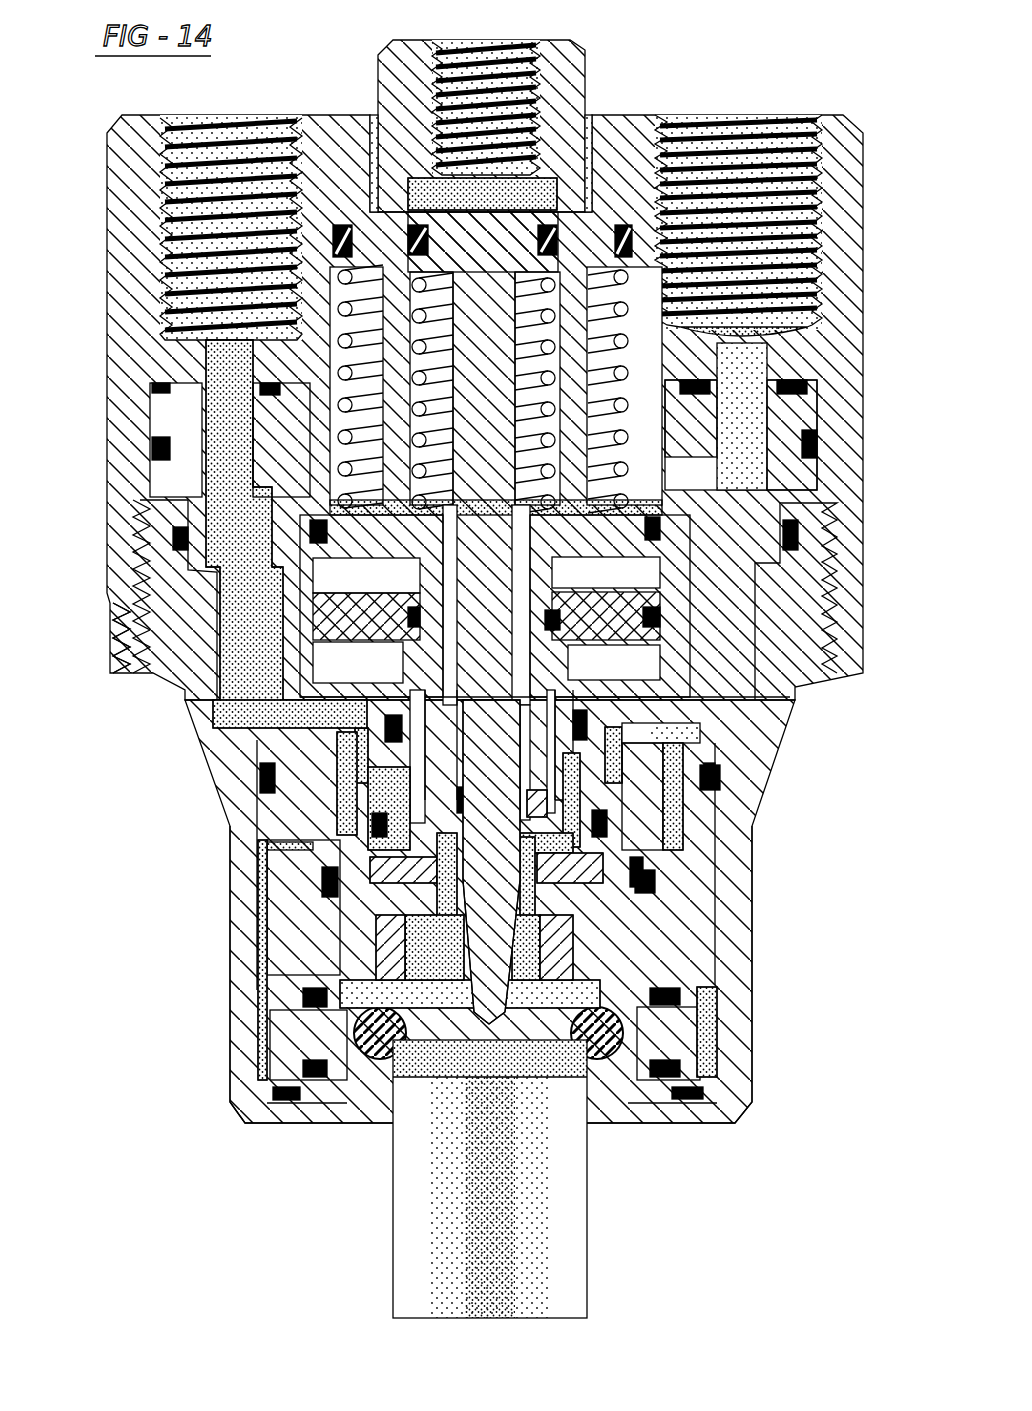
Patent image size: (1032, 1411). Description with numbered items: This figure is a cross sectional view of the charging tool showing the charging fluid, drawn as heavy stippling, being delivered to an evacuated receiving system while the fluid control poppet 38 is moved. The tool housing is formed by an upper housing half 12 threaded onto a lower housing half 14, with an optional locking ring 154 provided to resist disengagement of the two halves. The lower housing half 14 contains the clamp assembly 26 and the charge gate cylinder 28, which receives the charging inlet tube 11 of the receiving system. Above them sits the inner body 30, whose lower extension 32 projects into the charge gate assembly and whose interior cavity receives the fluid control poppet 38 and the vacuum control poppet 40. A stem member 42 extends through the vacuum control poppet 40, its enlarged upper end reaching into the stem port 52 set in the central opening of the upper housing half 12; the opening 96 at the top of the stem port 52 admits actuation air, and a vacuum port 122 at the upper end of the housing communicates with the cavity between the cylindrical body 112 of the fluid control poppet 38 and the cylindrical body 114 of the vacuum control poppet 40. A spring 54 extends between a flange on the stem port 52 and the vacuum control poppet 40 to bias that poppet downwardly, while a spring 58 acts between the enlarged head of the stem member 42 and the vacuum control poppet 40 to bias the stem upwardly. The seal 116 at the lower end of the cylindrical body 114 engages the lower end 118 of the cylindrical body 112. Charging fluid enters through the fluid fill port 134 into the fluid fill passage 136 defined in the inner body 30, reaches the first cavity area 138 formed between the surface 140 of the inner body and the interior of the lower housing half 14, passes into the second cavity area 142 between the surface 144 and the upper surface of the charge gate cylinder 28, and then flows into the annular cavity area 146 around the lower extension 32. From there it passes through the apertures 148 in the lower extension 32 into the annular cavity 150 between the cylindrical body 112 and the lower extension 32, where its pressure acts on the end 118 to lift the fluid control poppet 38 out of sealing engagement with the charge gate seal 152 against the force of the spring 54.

The charging inlet tube 11 is at (570, 1160).
The upper housing half 12 is at (100, 207).
The lower housing half 14 is at (226, 958).
The clamp assembly 26 is at (288, 918).
The charge gate cylinder 28 is at (236, 746).
The inner body 30 is at (145, 472).
The lower extension 32 is at (682, 804).
The fluid control poppet 38 is at (576, 664).
The vacuum control poppet 40 is at (553, 577).
The stem member 42 is at (432, 246).
The stem port 52 is at (588, 64).
The spring 54 is at (607, 310).
The spring 58 is at (530, 320).
The opening 96 is at (480, 67).
The cylindrical body 112 is at (640, 752).
The cylindrical body 114 is at (703, 700).
The seal 116 is at (280, 856).
The lower end 118 is at (307, 913).
The vacuum port 122 is at (760, 117).
The fluid fill port 134 is at (247, 118).
The fluid fill passage 136 is at (220, 405).
The first cavity area 138 is at (270, 590).
The surface 140 is at (300, 657).
The second cavity area 142 is at (338, 826).
The surface 144 is at (367, 790).
The annular cavity area 146 is at (665, 782).
The apertures 148 is at (265, 843).
The annular cavity 150 is at (680, 863).
The charge gate seal 152 is at (683, 852).
The locking ring 154 is at (113, 677).